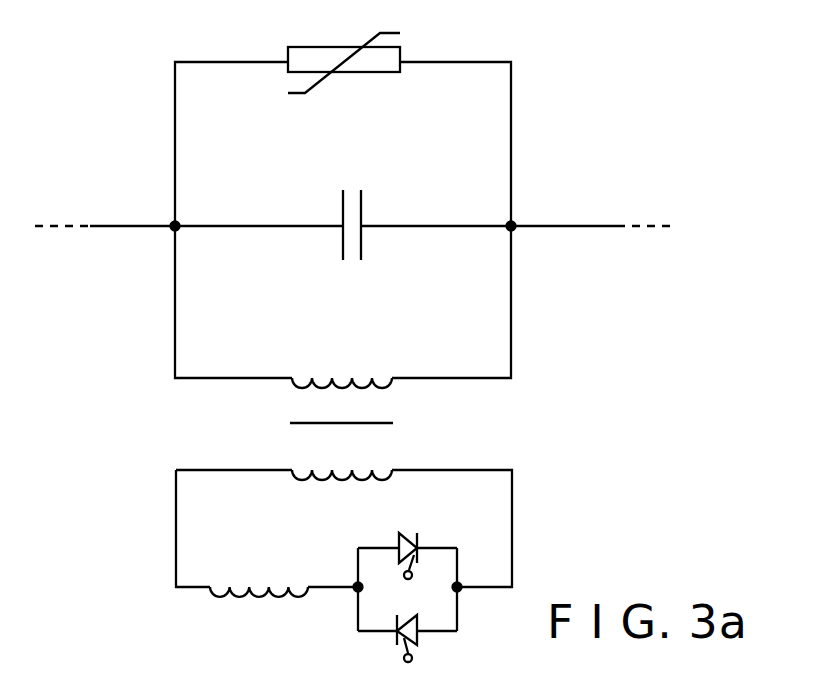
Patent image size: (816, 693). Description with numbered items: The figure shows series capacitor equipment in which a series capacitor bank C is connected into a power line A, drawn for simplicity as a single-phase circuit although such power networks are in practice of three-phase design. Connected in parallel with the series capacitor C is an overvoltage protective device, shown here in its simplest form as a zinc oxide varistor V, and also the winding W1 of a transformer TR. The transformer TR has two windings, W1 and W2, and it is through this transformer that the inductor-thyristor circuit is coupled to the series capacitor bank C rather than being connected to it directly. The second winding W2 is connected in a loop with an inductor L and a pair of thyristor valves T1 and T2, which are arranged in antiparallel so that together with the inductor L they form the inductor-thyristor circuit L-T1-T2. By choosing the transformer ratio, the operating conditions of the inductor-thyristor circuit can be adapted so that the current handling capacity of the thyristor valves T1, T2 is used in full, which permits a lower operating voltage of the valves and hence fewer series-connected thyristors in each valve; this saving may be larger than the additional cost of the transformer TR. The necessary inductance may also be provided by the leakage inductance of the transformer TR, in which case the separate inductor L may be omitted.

The power line A is at (587, 226).
The zinc oxide varistor V is at (362, 72).
The series capacitor C is at (361, 203).
The transformer winding W1 is at (362, 378).
The transformer TR is at (400, 422).
The transformer winding W2 is at (331, 484).
The inductor L is at (252, 600).
The thyristor T1 is at (420, 540).
The thyristor T2 is at (418, 637).